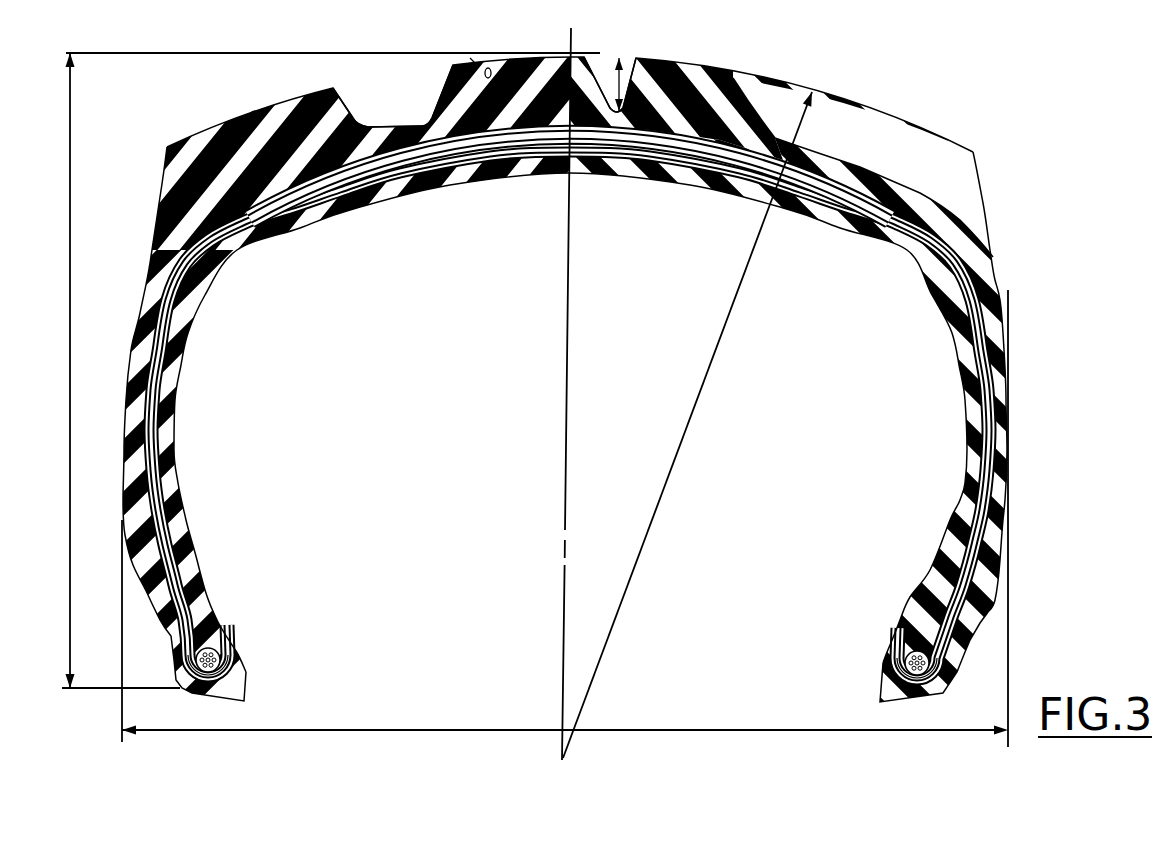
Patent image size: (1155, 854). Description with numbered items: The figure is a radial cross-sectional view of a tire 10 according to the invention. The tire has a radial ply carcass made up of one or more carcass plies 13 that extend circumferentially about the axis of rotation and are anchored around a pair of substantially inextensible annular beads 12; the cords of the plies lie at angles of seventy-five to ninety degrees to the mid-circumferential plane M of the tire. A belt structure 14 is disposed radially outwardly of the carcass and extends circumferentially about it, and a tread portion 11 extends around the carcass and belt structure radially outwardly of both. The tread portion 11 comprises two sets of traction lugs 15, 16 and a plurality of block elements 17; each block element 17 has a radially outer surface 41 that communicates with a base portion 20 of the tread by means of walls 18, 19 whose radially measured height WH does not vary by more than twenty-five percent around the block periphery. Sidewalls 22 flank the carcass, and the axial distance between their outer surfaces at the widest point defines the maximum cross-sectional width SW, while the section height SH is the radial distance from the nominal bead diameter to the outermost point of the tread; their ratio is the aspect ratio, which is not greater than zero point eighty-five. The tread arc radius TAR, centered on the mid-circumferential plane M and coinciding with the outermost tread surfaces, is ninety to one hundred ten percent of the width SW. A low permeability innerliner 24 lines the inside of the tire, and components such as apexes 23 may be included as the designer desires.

The tire 10 is at (970, 100).
The tread portion 11 is at (897, 165).
The annular beads 12 is at (233, 663).
The carcass plies 13 is at (990, 402).
The belt structure 14 is at (345, 164).
The traction lugs of the first set 15 is at (249, 112).
The traction lugs of the second set 16 is at (717, 71).
The block elements 17 is at (489, 68).
The wall of block element 18 is at (447, 75).
The wall of block element 19 is at (585, 68).
The base portion of the tread 20 is at (399, 132).
The sidewalls 22 is at (138, 372).
The apexes 23 is at (203, 643).
The innerliner 24 is at (171, 466).
The radially outer surface of block element 41 is at (473, 62).
The mid-circumferential plane M is at (572, 52).
The tread arc radius TAR is at (680, 455).
The section height SH is at (68, 340).
The maximum cross-sectional width SW is at (537, 728).
The wall height WH is at (627, 84).